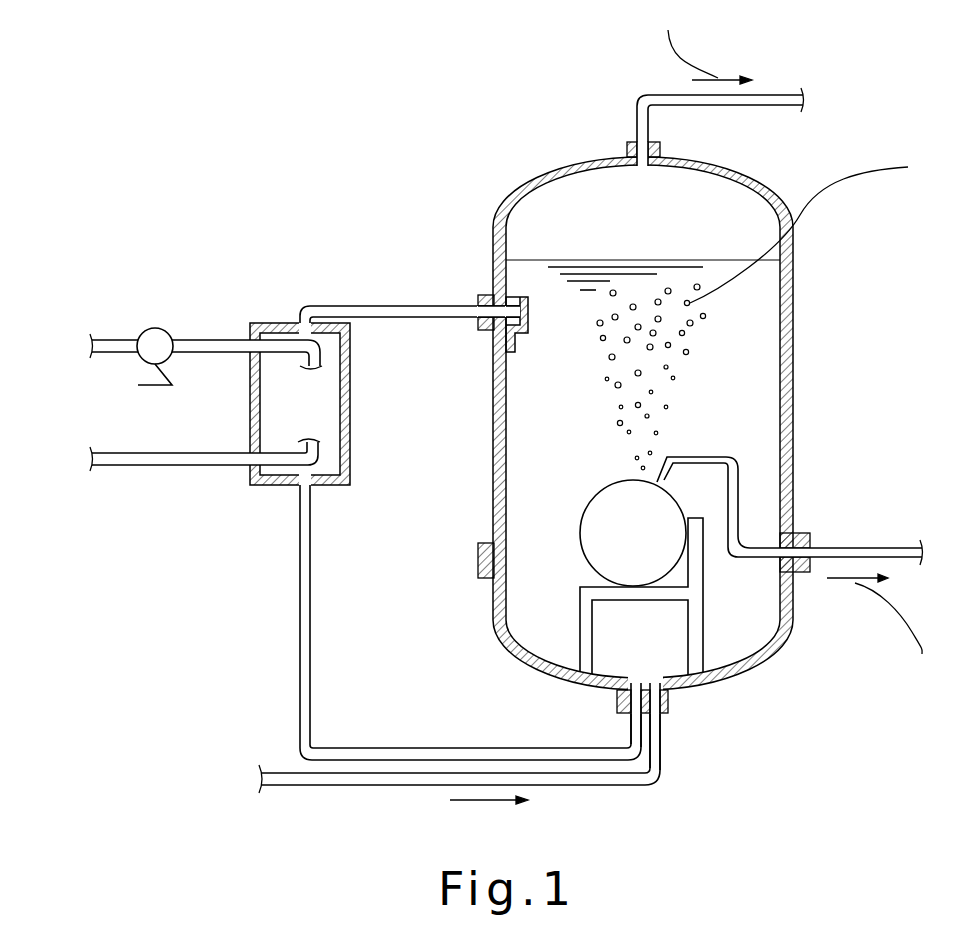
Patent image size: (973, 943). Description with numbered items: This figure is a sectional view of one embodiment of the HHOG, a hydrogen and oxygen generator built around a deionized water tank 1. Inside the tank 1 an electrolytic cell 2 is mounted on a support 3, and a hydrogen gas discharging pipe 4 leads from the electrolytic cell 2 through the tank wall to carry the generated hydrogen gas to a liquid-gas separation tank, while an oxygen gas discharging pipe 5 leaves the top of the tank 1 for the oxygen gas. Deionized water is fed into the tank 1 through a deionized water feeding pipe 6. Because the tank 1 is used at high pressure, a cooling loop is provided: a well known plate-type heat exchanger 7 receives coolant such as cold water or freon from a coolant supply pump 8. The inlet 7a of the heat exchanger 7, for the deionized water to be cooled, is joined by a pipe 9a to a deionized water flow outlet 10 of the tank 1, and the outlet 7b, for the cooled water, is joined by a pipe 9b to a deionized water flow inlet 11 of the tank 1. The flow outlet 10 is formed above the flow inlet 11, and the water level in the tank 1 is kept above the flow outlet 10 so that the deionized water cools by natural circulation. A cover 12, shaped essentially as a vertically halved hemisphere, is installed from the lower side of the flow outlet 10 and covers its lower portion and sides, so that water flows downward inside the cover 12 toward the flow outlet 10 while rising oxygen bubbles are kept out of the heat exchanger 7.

The deionized water tank 1 is at (793, 308).
The electrolytic cell 2 is at (592, 556).
The support 3 is at (696, 638).
The hydrogen gas discharging pipe 4 is at (840, 552).
The oxygen gas discharging pipe 5 is at (778, 92).
The deionized water feeding pipe 6 is at (360, 785).
The plate-type heat exchanger 7 is at (191, 299).
The inlet of heat exchanger 7a is at (304, 318).
The outlet of heat exchanger 7b is at (300, 487).
The coolant supply pump 8 is at (150, 329).
The pipe 9a is at (397, 306).
The pipe 9b is at (305, 610).
The deionized water flow outlet 10 is at (476, 305).
The deionized water flow inlet 11 is at (636, 703).
The cover for preventing inflow of oxygen gas 12 is at (520, 310).